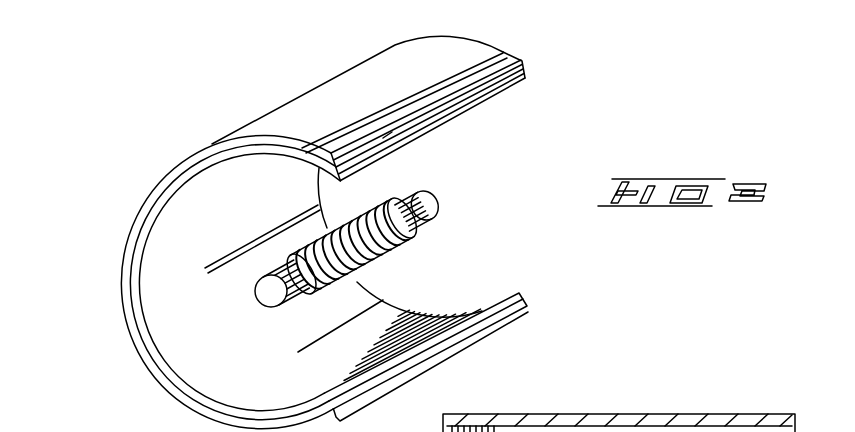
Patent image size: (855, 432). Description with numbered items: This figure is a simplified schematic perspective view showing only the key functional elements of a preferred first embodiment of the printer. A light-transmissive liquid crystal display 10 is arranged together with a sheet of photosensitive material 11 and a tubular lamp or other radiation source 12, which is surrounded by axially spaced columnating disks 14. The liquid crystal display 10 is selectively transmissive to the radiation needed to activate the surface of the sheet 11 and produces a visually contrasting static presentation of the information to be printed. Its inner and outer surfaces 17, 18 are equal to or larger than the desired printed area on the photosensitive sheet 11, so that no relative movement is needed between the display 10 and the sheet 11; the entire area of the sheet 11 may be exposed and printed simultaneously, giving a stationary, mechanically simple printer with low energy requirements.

The light-transmissive liquid crystal display 10 is at (447, 122).
The sheet of photosensitive material 11 is at (407, 60).
The tubular lamp or other radiation source 12 is at (433, 222).
The columnating disks 14 is at (396, 256).
The inner surface 17 is at (229, 374).
The outer surface 18 is at (387, 132).